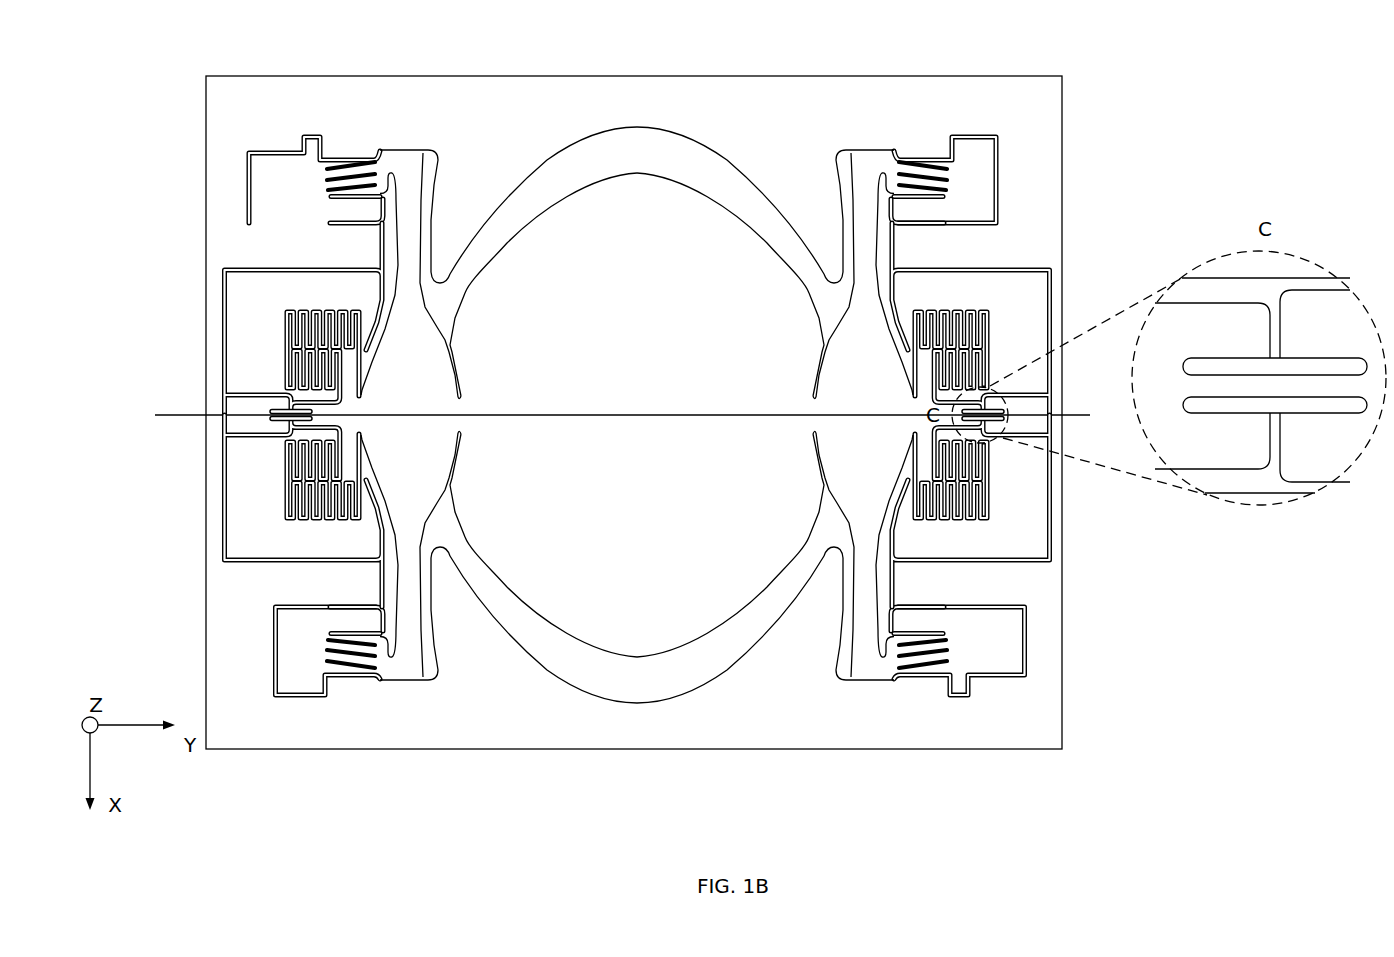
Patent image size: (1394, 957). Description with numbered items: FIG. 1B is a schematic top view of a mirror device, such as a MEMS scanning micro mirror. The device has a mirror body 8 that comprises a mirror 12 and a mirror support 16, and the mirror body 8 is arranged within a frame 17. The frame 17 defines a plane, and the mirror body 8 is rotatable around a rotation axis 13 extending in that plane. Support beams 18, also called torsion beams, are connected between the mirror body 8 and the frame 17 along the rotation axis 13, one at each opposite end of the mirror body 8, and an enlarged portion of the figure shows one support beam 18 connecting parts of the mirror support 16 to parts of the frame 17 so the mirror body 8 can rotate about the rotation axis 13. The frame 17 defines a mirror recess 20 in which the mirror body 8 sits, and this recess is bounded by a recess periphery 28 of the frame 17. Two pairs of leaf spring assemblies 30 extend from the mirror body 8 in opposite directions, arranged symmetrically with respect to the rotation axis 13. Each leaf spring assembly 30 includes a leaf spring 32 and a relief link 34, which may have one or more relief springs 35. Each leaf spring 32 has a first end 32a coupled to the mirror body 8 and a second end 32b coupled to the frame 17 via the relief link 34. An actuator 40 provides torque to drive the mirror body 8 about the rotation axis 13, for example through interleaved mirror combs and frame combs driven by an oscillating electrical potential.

The mirror body 8 is at (558, 660).
The mirror 12 is at (598, 196).
The rotation axis 13 is at (1072, 413).
The mirror support 16 is at (1183, 445).
The frame 17 is at (737, 113).
The support beams 18 is at (278, 408).
The mirror recess 20 is at (541, 174).
The recess periphery 28 is at (938, 750).
The leaf spring assembly 30 is at (445, 322).
The leaf spring 32 is at (437, 360).
The first end 32a is at (448, 405).
The second end 32b is at (397, 150).
The relief link 34 is at (345, 140).
The relief springs 35 is at (360, 167).
The actuator 40 is at (290, 282).